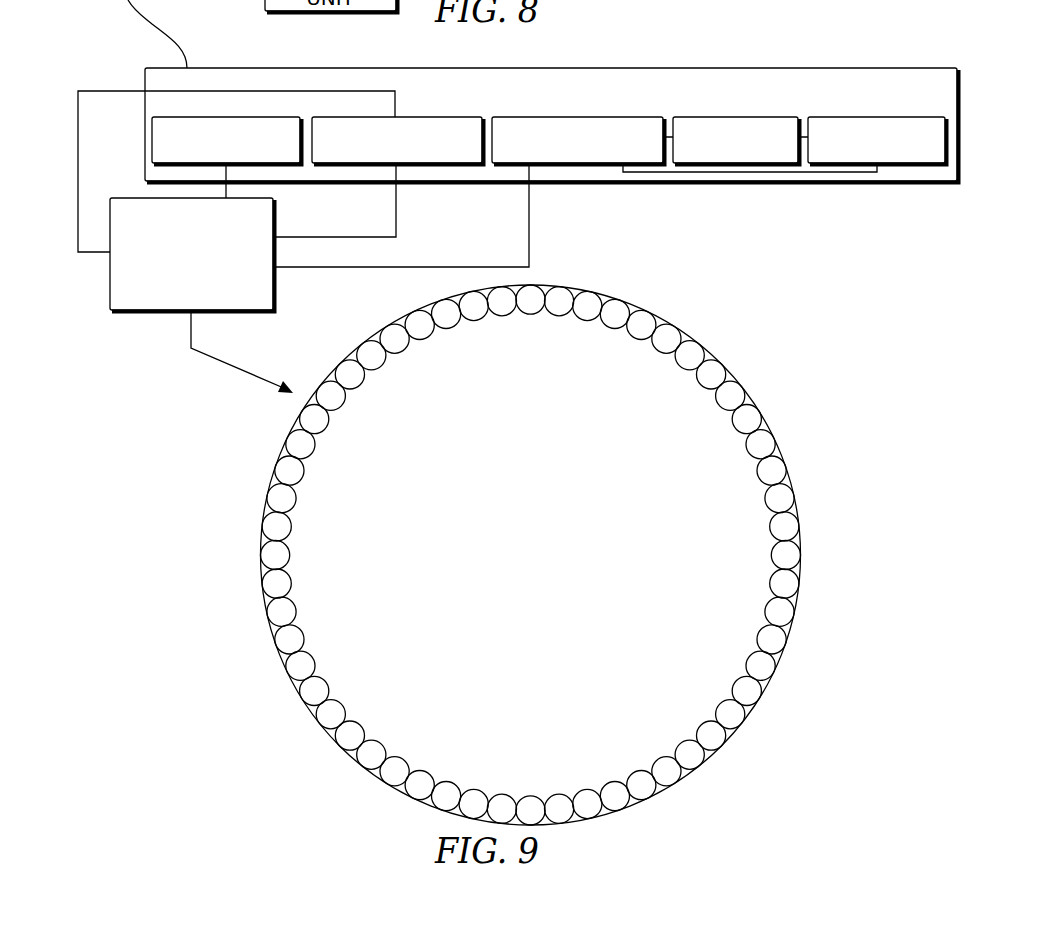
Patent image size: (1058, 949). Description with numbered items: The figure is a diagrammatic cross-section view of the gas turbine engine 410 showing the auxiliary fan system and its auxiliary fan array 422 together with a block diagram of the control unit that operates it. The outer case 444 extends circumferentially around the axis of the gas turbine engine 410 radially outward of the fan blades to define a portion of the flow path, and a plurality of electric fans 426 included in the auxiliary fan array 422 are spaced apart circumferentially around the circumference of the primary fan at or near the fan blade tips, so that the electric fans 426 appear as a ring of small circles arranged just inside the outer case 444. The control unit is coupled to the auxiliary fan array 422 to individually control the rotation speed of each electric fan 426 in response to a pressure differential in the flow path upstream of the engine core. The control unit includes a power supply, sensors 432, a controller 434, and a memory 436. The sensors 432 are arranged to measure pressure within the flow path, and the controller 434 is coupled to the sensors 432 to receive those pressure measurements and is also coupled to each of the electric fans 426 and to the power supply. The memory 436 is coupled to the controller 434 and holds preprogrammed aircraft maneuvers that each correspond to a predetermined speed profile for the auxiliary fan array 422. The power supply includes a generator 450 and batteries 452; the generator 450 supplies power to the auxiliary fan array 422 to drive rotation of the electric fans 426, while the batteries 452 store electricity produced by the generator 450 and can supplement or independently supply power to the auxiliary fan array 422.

The gas turbine engine 410 is at (136, 47).
The batteries 452 is at (222, 117).
The generator 450 is at (432, 117).
The controller 434 is at (646, 117).
The memory 436 is at (733, 117).
The sensors 432 is at (858, 117).
The auxiliary fan array 422 is at (147, 310).
The outer case 444 is at (748, 368).
The electric fans 426 is at (246, 578).